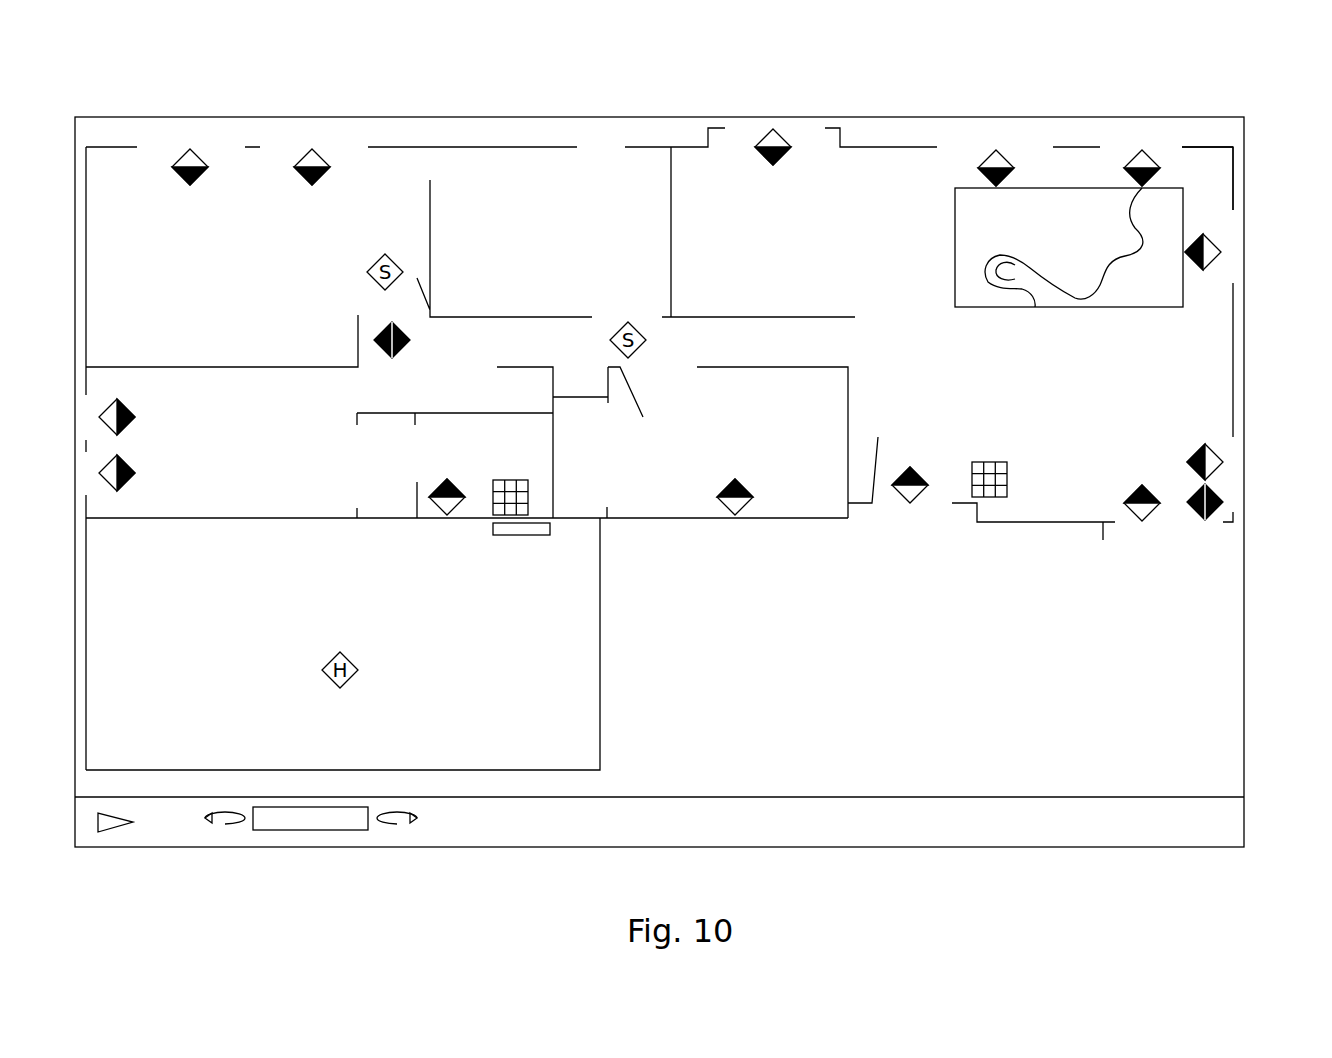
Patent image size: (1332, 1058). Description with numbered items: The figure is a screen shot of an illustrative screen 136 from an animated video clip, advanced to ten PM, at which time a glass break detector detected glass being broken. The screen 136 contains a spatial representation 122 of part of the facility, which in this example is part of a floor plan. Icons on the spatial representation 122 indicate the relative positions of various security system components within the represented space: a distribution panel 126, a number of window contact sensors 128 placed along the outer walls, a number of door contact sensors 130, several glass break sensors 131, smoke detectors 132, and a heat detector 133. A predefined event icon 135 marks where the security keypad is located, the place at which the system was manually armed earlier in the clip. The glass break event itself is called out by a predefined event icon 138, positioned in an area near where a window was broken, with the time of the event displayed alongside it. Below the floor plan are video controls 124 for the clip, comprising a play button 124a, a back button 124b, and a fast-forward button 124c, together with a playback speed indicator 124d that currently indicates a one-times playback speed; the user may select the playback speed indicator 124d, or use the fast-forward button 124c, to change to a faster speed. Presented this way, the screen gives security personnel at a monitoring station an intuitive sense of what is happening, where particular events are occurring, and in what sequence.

The spatial representation 122 is at (522, 85).
The video controls 124 is at (470, 860).
The play button 124a is at (115, 833).
The back button 124b is at (207, 831).
The fast-forward button 124c is at (420, 831).
The playback speed indicator 124d is at (311, 831).
The distribution panel 126 is at (525, 537).
The window contact sensors 128 is at (190, 149).
The door contact sensors 130 is at (447, 479).
The glass break sensors 131 is at (405, 353).
The smoke detectors 132 is at (368, 271).
The heat detector 133 is at (352, 661).
The predefined event icon 135 is at (1007, 490).
The screen 136 is at (1138, 80).
The predefined event icon 138 is at (1170, 212).